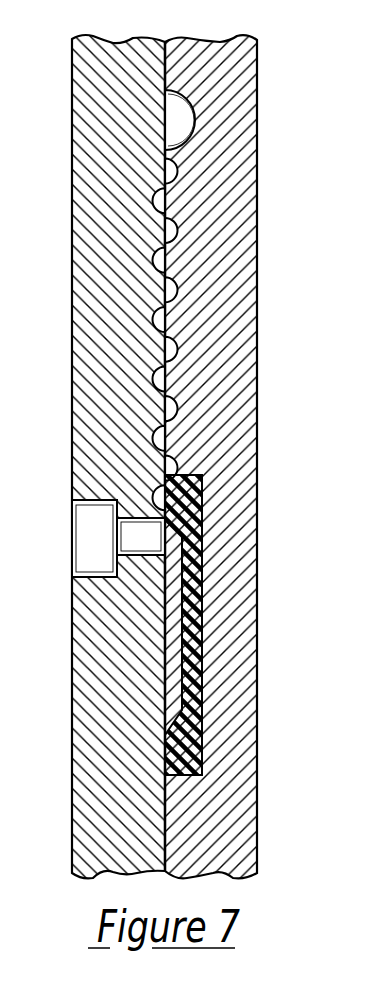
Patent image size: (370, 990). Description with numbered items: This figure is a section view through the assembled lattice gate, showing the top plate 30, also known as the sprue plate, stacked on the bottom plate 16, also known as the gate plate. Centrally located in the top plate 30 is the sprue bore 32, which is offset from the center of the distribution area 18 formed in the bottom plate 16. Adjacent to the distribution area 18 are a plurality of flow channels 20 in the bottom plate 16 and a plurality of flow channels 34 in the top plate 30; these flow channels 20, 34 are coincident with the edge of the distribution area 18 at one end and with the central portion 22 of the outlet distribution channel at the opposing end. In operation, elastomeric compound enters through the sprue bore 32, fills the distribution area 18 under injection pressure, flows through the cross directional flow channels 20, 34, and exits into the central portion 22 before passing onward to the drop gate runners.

The bottom plate 16 is at (233, 462).
The distribution area 18 is at (173, 695).
The flow channels 20 is at (173, 230).
The central portion 22 is at (187, 123).
The top plate 30 is at (98, 432).
The sprue bore 32 is at (92, 535).
The flow channels 34 is at (155, 270).